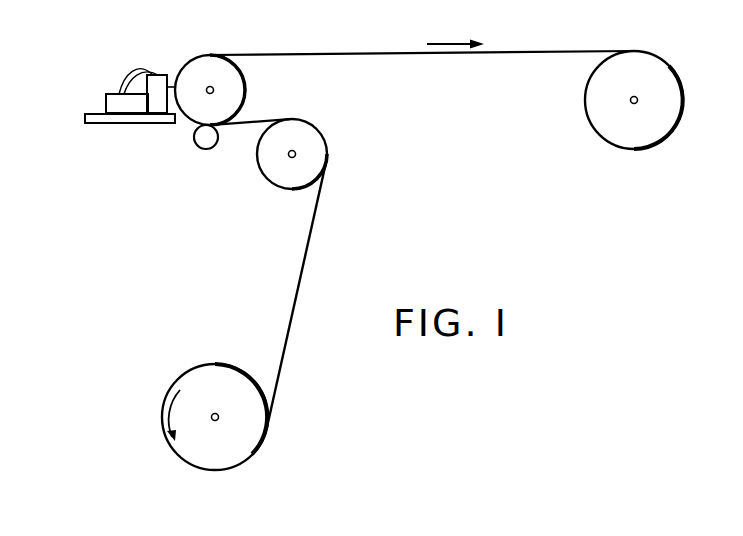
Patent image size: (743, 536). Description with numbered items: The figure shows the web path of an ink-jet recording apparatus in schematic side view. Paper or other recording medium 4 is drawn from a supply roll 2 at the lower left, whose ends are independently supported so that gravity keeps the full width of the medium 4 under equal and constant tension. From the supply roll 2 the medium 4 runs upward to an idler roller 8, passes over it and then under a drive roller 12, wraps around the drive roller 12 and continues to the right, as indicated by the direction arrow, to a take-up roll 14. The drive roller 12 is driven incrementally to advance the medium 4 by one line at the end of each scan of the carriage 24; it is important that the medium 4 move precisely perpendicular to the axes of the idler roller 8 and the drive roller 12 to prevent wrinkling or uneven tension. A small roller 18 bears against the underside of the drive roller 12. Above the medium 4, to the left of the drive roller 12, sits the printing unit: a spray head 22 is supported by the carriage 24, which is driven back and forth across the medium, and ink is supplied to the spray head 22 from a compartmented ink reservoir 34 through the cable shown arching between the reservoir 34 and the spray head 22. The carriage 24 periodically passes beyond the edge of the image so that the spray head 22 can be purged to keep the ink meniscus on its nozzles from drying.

The supply roll 2 is at (164, 390).
The medium 4 is at (298, 283).
The idler roller 8 is at (266, 181).
The drive roller 12 is at (246, 88).
The take-up roll 14 is at (684, 100).
The pressure roller 18 is at (203, 149).
The spray head 22 is at (164, 68).
The carriage 24 is at (85, 117).
The ink reservoir 34 is at (97, 99).